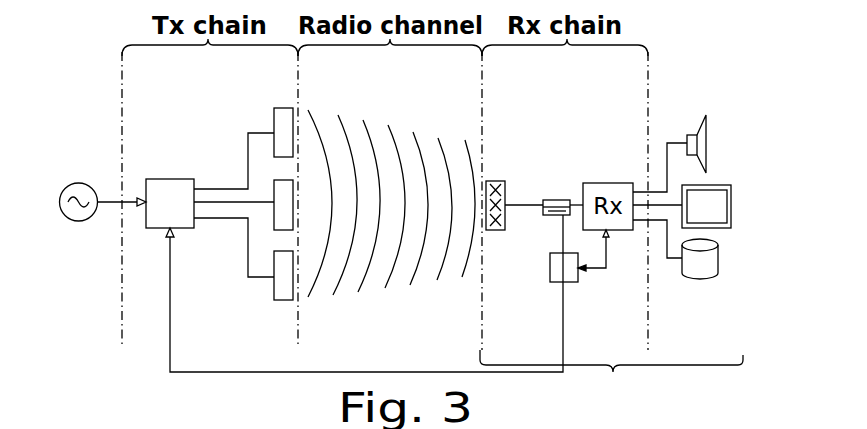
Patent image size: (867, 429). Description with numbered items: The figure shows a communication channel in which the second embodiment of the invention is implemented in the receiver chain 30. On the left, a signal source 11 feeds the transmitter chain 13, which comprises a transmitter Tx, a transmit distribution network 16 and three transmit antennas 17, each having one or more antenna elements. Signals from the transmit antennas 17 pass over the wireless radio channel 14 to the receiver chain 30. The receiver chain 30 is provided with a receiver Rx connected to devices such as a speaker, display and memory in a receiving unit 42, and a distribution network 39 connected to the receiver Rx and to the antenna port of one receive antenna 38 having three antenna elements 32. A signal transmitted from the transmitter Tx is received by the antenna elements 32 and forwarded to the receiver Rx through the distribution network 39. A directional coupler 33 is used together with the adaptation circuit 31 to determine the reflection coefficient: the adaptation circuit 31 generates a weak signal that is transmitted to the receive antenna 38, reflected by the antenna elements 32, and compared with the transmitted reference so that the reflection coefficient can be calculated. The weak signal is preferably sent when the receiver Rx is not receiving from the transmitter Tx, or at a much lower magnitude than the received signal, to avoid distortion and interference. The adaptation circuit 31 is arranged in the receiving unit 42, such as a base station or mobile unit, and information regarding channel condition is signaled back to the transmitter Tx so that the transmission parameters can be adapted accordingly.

The signal source 11 is at (82, 222).
The transmitter chain 13 is at (223, 80).
The wireless radio channel 14 is at (408, 80).
The transmit distribution network 16 is at (217, 256).
The transmit antennas 17 is at (277, 117).
The receiver chain 30 is at (585, 80).
The adaptation circuit 31 is at (573, 277).
The antenna elements 32 is at (497, 192).
The directional coupler 33 is at (557, 220).
The receive antenna 38 is at (498, 230).
The distribution network 39 is at (551, 164).
The receiving unit 42 is at (611, 373).